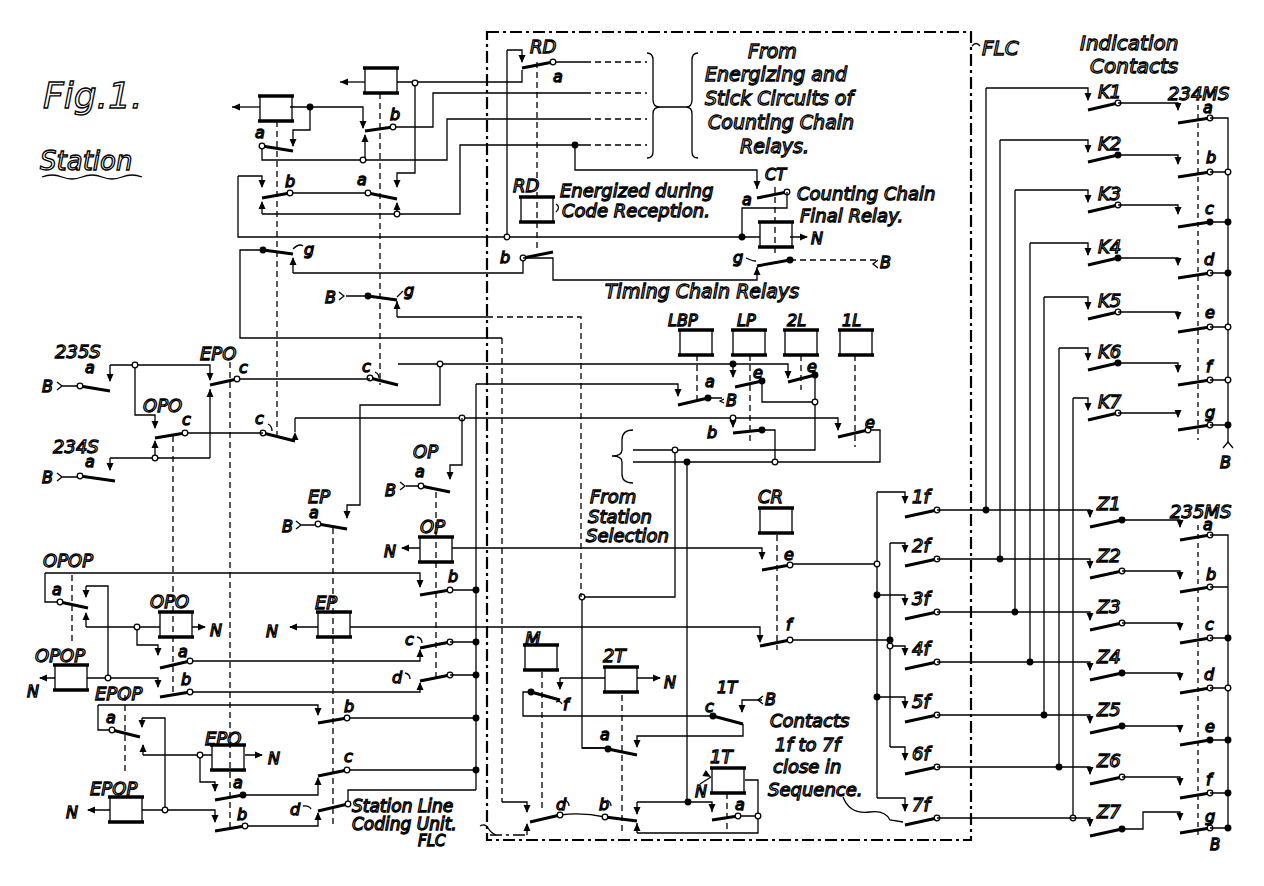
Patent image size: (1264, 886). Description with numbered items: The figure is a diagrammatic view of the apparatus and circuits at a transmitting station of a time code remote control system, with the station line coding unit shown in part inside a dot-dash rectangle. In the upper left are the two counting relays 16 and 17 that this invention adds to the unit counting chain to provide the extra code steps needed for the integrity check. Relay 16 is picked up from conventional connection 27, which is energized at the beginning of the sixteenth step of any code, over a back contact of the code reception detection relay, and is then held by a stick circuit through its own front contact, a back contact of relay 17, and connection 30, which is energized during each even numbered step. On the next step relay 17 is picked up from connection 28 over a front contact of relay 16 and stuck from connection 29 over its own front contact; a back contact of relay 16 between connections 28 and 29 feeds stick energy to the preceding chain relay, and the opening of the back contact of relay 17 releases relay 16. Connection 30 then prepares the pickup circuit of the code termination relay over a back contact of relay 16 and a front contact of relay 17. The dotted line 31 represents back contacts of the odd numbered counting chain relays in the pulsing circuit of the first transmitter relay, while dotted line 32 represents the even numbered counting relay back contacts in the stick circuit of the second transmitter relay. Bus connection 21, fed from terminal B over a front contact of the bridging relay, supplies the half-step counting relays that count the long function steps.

The counting relay 16 is at (366, 215).
The counting relay 17 is at (251, 258).
The bus connection 21 is at (476, 750).
The conventional connection 27 is at (616, 51).
The conventional connection 28 is at (616, 82).
The conventional connection 29 is at (616, 108).
The conventional connection 30 is at (616, 134).
The conventional circuitry 31 is at (502, 430).
The conventional dotted line 32 is at (581, 330).